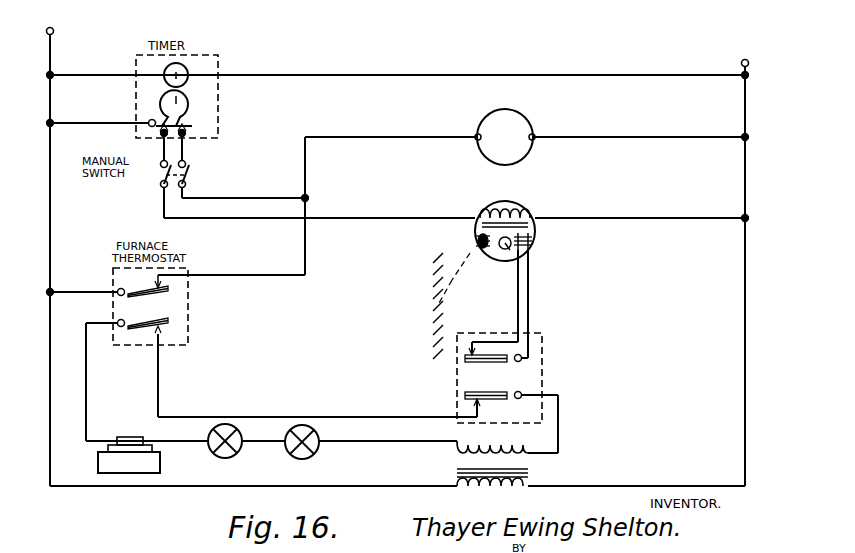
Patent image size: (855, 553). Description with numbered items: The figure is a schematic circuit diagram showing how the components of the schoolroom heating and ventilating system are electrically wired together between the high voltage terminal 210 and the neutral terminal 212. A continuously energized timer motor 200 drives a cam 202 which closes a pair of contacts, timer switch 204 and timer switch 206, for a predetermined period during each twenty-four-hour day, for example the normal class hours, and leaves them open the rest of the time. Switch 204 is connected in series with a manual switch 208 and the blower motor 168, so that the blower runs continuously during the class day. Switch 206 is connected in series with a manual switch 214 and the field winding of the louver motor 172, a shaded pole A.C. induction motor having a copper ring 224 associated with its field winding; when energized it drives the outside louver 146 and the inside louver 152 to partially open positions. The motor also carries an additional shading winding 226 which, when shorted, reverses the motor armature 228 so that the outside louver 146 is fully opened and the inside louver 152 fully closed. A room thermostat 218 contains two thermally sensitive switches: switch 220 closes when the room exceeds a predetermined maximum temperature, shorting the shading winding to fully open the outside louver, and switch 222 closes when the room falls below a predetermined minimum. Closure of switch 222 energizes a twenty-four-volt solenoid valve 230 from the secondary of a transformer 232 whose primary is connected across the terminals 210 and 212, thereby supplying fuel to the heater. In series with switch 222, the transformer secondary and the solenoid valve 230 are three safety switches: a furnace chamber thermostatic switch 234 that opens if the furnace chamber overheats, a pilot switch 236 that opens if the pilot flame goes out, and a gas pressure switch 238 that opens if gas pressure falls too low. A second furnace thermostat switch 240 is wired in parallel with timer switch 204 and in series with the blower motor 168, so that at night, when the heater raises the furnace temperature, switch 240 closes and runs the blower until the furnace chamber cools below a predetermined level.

The high voltage terminal 210 is at (56, 27).
The neutral terminal 212 is at (740, 62).
The timer motor 200 is at (186, 72).
The cam 202 is at (188, 106).
The timer switch 204 is at (188, 146).
The timer switch 206 is at (160, 145).
The manual switch 208 is at (192, 175).
The manual switch 214 is at (160, 183).
The blower motor 168 is at (478, 128).
The louver motor 172 is at (505, 205).
The copper ring 224 is at (482, 236).
The shading winding 226 is at (530, 245).
The motor armature 228 is at (507, 250).
The outside louver 146 is at (431, 269).
The inside louver 152 is at (379, 260).
The furnace thermostat switch 240 is at (165, 292).
The furnace chamber thermostatic switch 234 is at (160, 338).
The solenoid valve 230 is at (132, 465).
The pilot switch 236 is at (222, 430).
The gas pressure switch 238 is at (302, 428).
The room thermostat 218 is at (540, 340).
The thermally sensitive switch 220 is at (470, 360).
The thermally sensitive switch 222 is at (470, 400).
The transformer 232 is at (535, 470).